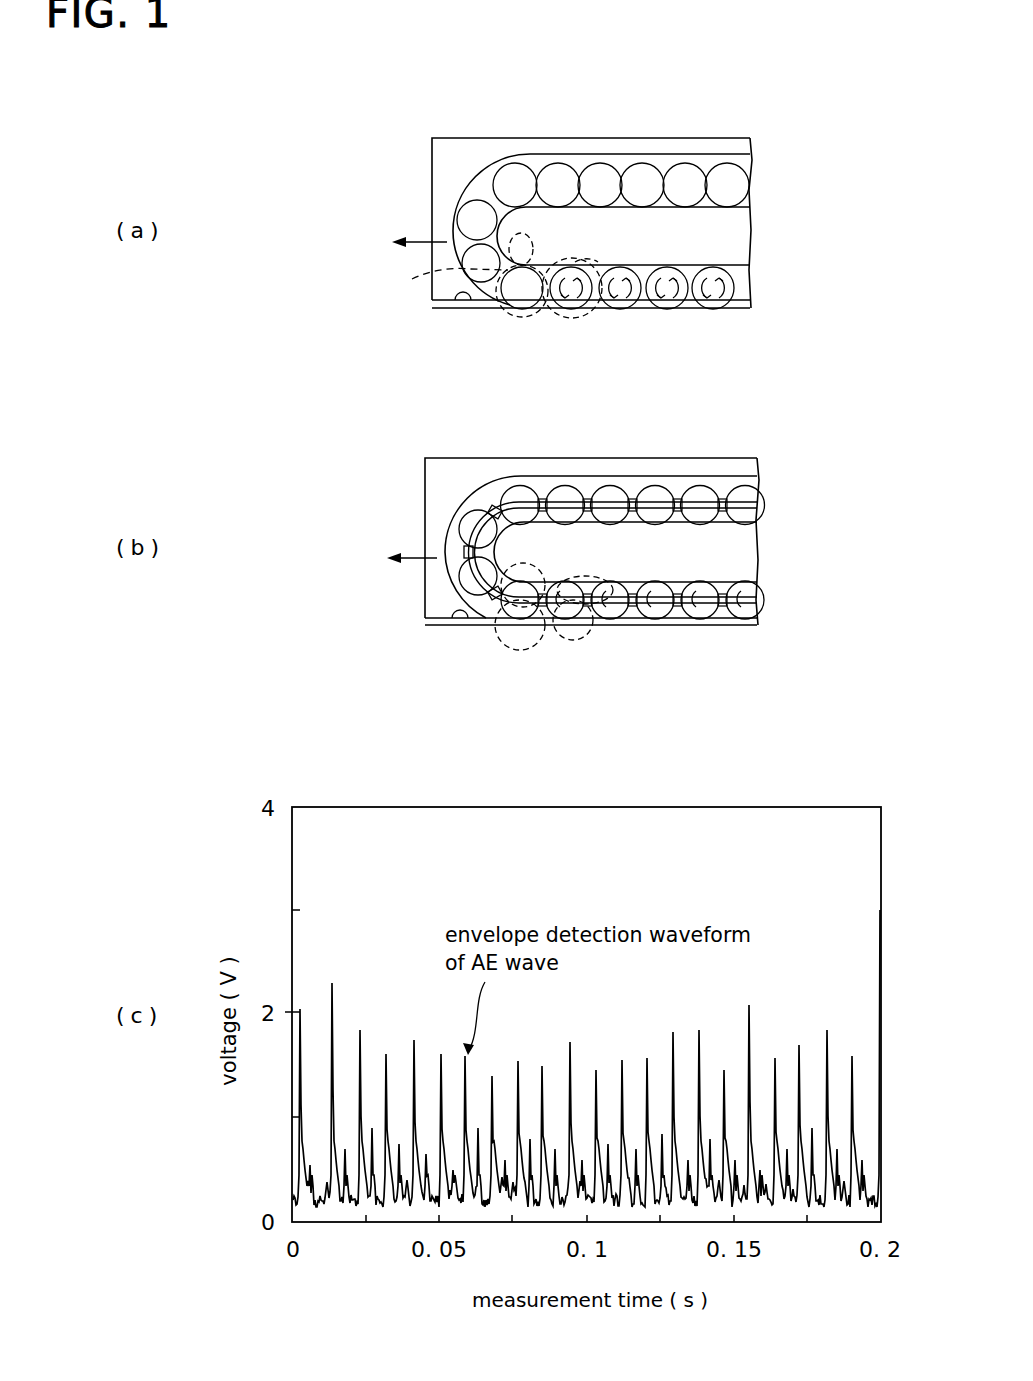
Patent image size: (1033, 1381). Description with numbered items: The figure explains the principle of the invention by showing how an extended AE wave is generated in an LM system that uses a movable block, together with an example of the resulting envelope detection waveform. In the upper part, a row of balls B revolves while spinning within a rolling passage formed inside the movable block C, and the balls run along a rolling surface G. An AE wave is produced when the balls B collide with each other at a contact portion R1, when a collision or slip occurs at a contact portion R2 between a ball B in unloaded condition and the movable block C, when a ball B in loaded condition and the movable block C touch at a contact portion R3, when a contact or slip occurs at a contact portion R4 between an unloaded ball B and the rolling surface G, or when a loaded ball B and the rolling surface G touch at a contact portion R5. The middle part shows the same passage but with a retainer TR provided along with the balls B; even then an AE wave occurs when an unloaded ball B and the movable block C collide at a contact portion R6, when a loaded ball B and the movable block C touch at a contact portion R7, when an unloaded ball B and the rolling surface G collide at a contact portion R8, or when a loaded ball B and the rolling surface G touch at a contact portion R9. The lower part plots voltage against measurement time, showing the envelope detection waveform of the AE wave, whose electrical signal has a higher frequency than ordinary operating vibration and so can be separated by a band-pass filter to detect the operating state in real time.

The ball B is at (745, 170).
The movable block C is at (432, 197).
The retainer TR is at (455, 520).
The rolling surface G is at (455, 302).
The contact portion R1 is at (447, 284).
The contact portion R2 is at (534, 247).
The contact portion R3 is at (588, 238).
The contact portion R4 is at (523, 318).
The contact portion R5 is at (585, 316).
The contact portion R6 is at (535, 560).
The contact portion R7 is at (596, 574).
The contact portion R8 is at (535, 641).
The contact portion R9 is at (582, 641).